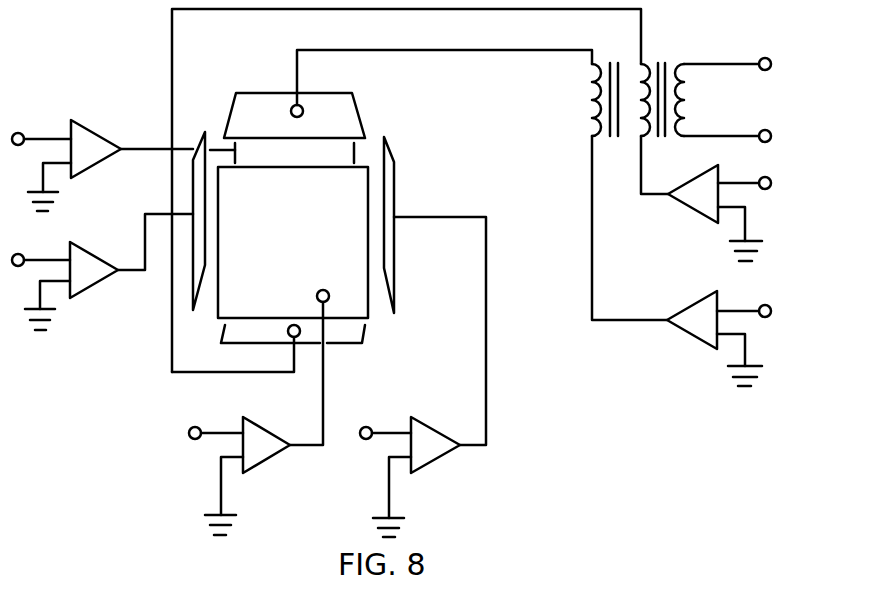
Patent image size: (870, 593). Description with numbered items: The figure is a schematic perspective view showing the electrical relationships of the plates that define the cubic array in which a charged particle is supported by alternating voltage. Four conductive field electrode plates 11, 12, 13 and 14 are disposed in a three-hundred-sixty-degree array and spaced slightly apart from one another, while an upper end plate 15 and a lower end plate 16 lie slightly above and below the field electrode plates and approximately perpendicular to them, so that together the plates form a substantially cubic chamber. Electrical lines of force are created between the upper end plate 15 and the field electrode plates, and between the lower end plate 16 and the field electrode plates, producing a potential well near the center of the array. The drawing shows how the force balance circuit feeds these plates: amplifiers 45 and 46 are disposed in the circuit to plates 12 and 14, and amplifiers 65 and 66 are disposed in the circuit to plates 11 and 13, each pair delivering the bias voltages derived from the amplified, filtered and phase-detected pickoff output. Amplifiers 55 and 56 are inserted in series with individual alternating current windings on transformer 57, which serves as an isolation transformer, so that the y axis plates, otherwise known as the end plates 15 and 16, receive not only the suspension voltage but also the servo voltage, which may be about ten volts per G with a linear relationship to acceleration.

The field electrode plate 11 is at (368, 308).
The field electrode plate 12 is at (203, 136).
The field electrode plate 13 is at (356, 156).
The field electrode plate 14 is at (396, 177).
The upper end plate 15 is at (270, 93).
The lower end plate 16 is at (340, 346).
The amplifier 45 is at (88, 250).
The amplifier 46 is at (433, 430).
The amplifier 55 is at (690, 338).
The amplifier 56 is at (690, 212).
The transformer 57 is at (681, 89).
The amplifier 65 is at (95, 130).
The amplifier 66 is at (265, 430).